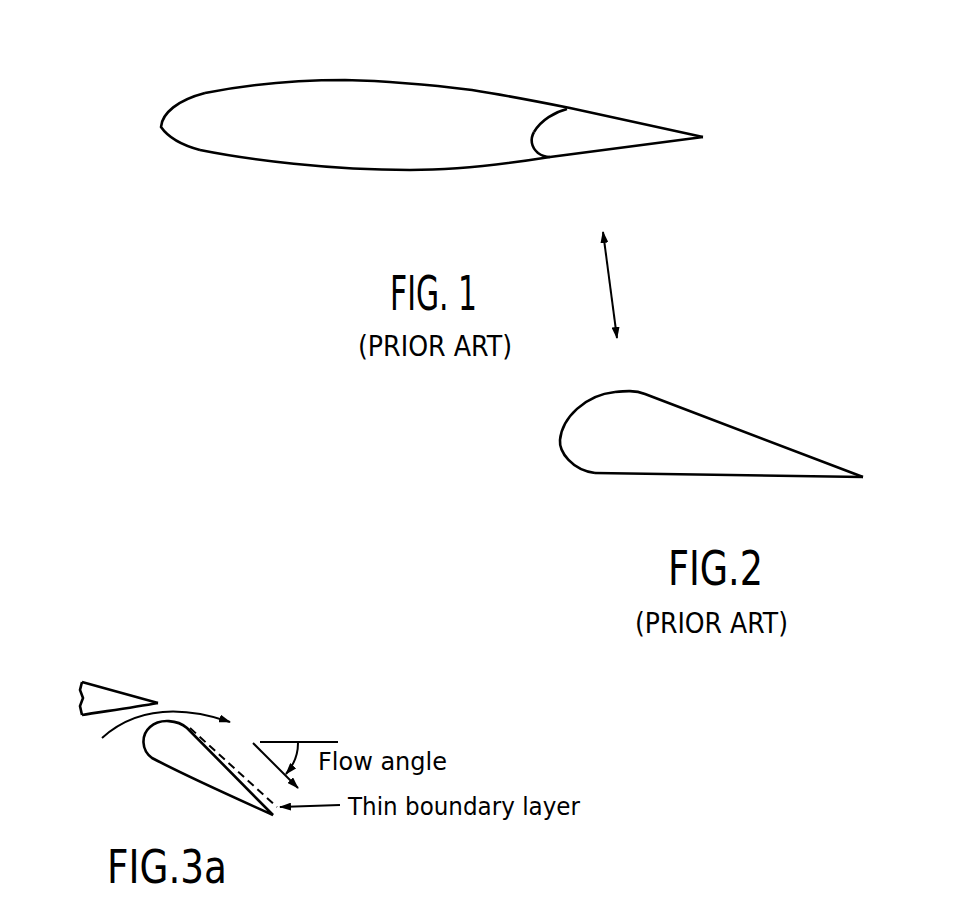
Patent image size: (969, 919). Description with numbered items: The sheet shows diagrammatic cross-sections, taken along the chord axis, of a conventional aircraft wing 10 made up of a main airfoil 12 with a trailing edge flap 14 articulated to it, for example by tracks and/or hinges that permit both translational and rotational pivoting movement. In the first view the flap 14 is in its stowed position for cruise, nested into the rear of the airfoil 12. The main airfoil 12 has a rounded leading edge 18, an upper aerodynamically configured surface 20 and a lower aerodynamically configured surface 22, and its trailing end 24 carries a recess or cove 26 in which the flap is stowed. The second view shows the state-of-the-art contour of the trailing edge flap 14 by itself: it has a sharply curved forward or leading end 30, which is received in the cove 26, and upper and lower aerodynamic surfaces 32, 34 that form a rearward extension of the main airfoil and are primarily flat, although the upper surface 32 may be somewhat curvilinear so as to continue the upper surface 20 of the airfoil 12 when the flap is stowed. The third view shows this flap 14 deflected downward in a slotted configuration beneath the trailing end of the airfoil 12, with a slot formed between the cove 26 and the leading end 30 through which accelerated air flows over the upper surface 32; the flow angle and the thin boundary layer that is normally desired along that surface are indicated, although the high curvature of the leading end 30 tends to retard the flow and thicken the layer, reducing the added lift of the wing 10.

In FIG. 1, the aircraft wing 10 is at (415, 82).
In FIG. 1, the main airfoil 12 is at (182, 103).
In FIG. 3A, the main airfoil 12 is at (105, 683).
In FIG. 1, the trailing edge flap 14 is at (630, 118).
In FIG. 2, the trailing edge flap 14 is at (685, 398).
In FIG. 3A, the trailing edge flap 14 is at (153, 757).
In FIG. 1, the rounded leading edge 18 is at (182, 148).
In FIG. 1, the upper aerodynamically configured surface 20 is at (472, 90).
In FIG. 1, the lower aerodynamically configured surface 22 is at (418, 170).
In FIG. 1, the trailing end 24 is at (577, 107).
In FIG. 3A, the trailing end 24 is at (158, 703).
In FIG. 1, the cove 26 is at (535, 150).
In FIG. 2, the leading end 30 is at (560, 447).
In FIG. 2, the upper aerodynamic surface 32 is at (757, 433).
In FIG. 2, the lower aerodynamic surface 34 is at (780, 478).